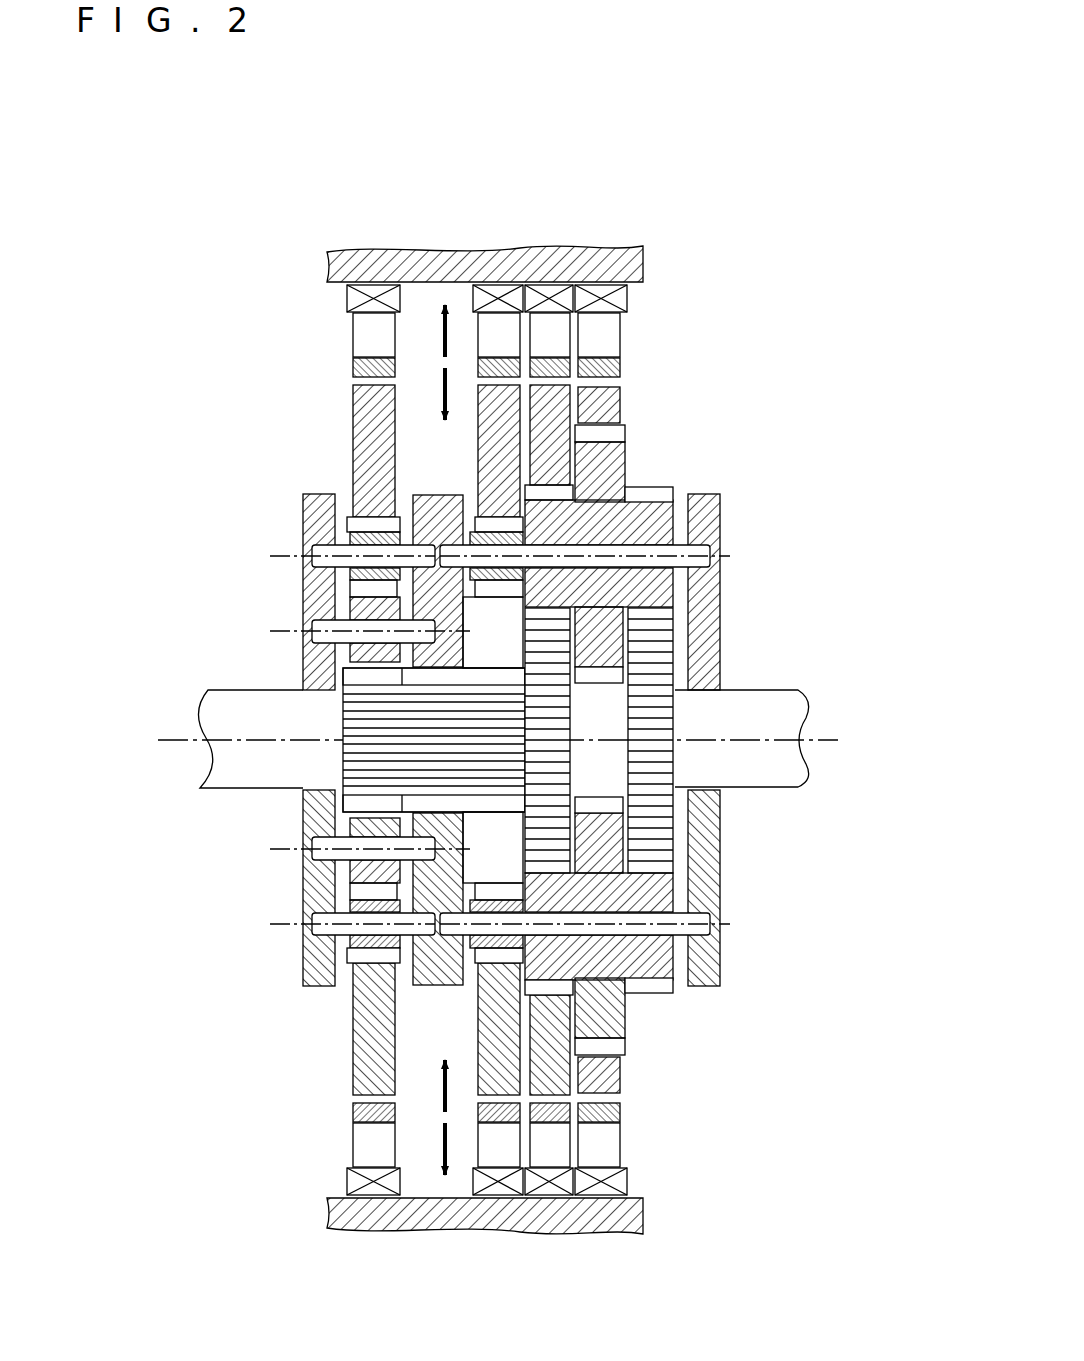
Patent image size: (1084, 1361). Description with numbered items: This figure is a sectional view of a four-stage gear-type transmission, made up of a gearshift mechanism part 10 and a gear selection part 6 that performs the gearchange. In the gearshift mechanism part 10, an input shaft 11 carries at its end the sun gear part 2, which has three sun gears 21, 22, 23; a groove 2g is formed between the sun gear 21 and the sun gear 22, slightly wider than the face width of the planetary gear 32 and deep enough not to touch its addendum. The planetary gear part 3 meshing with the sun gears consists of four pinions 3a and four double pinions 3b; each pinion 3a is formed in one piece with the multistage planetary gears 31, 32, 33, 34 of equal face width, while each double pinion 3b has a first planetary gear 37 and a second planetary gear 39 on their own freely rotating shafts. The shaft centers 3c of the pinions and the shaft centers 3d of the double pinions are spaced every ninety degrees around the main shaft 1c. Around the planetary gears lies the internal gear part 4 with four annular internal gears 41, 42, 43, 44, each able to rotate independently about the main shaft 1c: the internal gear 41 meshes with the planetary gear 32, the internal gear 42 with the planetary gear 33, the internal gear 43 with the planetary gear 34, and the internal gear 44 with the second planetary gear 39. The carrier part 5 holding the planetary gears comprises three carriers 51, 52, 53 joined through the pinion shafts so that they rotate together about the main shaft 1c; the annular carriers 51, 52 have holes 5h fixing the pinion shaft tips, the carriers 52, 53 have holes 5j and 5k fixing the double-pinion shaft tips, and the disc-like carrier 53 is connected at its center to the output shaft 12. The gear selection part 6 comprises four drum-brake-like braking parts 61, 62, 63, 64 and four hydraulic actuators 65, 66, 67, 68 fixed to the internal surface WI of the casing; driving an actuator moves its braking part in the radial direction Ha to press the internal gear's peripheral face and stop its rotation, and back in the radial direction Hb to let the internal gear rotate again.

The main shaft 1c is at (827, 737).
The sun gear part 2 is at (680, 750).
The groove 2g is at (605, 650).
The planetary gear part 3 is at (752, 1050).
The pinion 3a is at (752, 1003).
The double pinion 3b is at (327, 1035).
The shaft center 3c is at (718, 555).
The shaft center 3d is at (300, 846).
The internal gear part 4 is at (212, 386).
The carrier part 5 is at (840, 472).
The hole 5h is at (727, 560).
The hole 5j is at (300, 631).
The hole 5k is at (300, 555).
The gear selection part 6 is at (745, 318).
The gearshift mechanism part 10 is at (835, 372).
The input shaft 11 is at (753, 688).
The output shaft 12 is at (205, 690).
The sun gear 21 is at (675, 823).
The sun gear 22 is at (523, 820).
The sun gear 23 is at (345, 745).
The planetary gear 31 is at (640, 1037).
The planetary gear 32 is at (622, 1105).
The planetary gear 33 is at (550, 995).
The planetary gear 34 is at (497, 598).
The first planetary gear 37 is at (347, 867).
The second planetary gear 39 is at (348, 972).
The internal gear 41 is at (622, 408).
The internal gear 42 is at (578, 380).
The internal gear 43 is at (468, 388).
The internal gear 44 is at (353, 392).
The carrier 51 is at (712, 495).
The carrier 52 is at (415, 490).
The carrier 53 is at (303, 500).
The braking part 61 is at (622, 345).
The braking part 62 is at (555, 1160).
The braking part 63 is at (500, 1160).
The braking part 64 is at (352, 330).
The actuator 65 is at (637, 298).
The actuator 66 is at (560, 273).
The actuator 67 is at (500, 285).
The actuator 68 is at (343, 298).
The radial direction Ha is at (440, 740).
The radial direction Hb is at (430, 330).
The internal surface of the casing WI is at (363, 252).